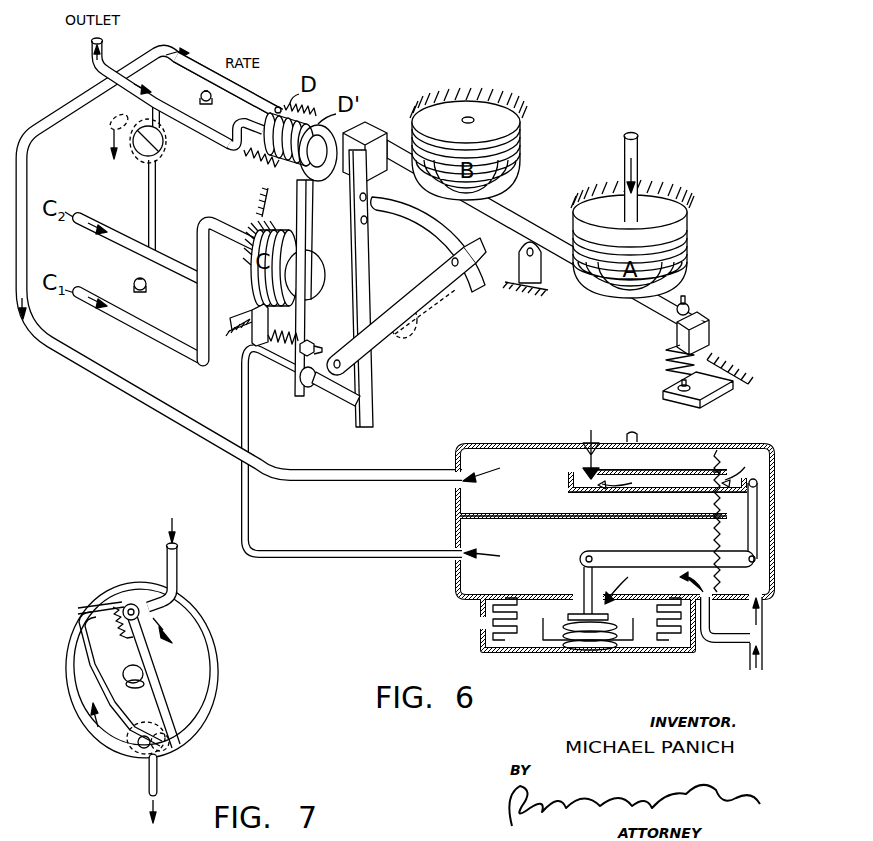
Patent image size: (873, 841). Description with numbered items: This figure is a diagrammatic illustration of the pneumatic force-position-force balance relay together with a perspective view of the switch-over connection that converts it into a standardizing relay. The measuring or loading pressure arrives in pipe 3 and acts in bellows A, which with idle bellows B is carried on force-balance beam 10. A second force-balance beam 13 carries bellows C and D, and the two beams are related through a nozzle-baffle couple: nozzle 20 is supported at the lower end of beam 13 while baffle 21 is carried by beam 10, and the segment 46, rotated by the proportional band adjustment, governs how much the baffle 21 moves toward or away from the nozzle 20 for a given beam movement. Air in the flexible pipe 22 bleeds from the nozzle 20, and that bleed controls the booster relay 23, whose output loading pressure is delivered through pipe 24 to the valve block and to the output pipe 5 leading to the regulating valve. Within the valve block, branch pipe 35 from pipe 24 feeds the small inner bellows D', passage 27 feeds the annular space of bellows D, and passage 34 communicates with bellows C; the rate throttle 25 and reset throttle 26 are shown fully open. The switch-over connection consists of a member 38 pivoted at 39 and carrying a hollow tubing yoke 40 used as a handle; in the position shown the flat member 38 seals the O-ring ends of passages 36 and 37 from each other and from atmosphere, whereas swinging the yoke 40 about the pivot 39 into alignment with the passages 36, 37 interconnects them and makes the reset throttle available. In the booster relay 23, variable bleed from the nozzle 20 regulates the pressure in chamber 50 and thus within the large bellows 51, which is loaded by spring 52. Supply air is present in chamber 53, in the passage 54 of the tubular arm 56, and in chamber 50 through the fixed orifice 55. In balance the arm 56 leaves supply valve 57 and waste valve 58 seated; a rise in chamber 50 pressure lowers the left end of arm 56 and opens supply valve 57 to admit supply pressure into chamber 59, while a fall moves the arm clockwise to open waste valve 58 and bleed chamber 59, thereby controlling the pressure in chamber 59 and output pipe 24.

In FIG. 6, the pipe 3 is at (640, 164).
In FIG. 6, the output pipe 5 is at (92, 52).
In FIG. 6, the force-balance beam 10 is at (524, 216).
In FIG. 6, the force-balance beam 13 is at (314, 211).
In FIG. 6, the nozzle 20 is at (356, 402).
In FIG. 6, the baffle 21 is at (369, 410).
In FIG. 6, the pipe 22 is at (249, 437).
In FIG. 6, the booster relay 23 is at (483, 443).
In FIG. 6, the pipe 24 is at (320, 486).
In FIG. 6, the rate throttle 25 is at (218, 93).
In FIG. 6, the reset throttle 26 is at (148, 287).
In FIG. 6, the passage 27 is at (264, 96).
In FIG. 6, the passage 34 is at (220, 224).
In FIG. 6, the branch pipe 35 is at (198, 140).
In FIG. 6, the passage 36 is at (151, 111).
In FIG. 7, the passage 36 is at (184, 579).
In FIG. 6, the passage 37 is at (148, 201).
In FIG. 7, the passage 37 is at (146, 780).
In FIG. 6, the member 38 is at (165, 160).
In FIG. 7, the member 38 is at (155, 668).
In FIG. 7, the pivot 39 is at (134, 690).
In FIG. 6, the hollow tubing yoke 40 is at (171, 157).
In FIG. 7, the hollow tubing yoke 40 is at (91, 653).
In FIG. 6, the segment 46 is at (452, 302).
In FIG. 6, the chamber 50 is at (526, 553).
In FIG. 6, the large bellows 51 is at (515, 621).
In FIG. 6, the spring 52 is at (616, 643).
In FIG. 6, the chamber 53 is at (722, 583).
In FIG. 6, the passage 54 is at (656, 492).
In FIG. 6, the fixed orifice 55 is at (706, 608).
In FIG. 6, the tubular arm 56 is at (636, 472).
In FIG. 6, the supply valve 57 is at (583, 470).
In FIG. 6, the waste valve 58 is at (588, 441).
In FIG. 6, the chamber 59 is at (502, 493).